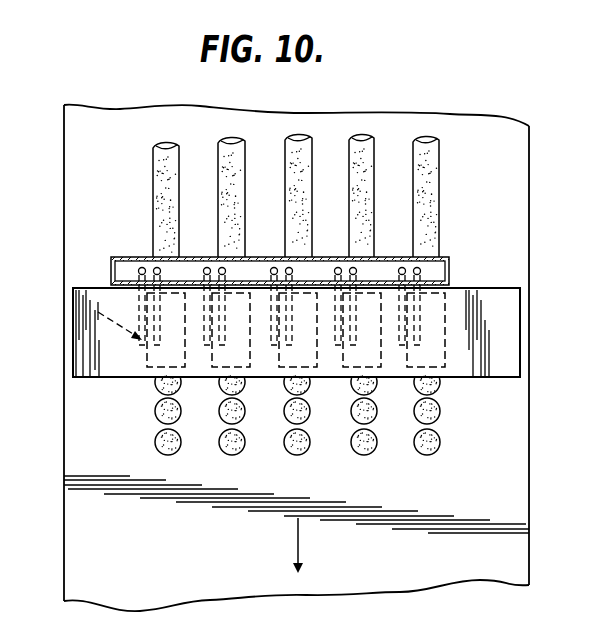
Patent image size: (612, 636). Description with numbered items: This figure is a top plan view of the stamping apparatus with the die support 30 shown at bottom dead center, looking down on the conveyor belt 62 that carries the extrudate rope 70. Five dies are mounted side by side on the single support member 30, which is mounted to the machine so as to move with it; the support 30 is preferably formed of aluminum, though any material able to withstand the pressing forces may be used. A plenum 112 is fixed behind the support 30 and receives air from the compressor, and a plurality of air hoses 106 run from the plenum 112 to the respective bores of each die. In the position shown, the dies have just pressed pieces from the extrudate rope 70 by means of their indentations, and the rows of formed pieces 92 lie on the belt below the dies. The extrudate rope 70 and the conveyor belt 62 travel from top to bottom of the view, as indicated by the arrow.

The support member 30 is at (505, 323).
The conveyor belt 62 is at (80, 197).
The extrudate rope 70 is at (285, 158).
The solder bumps 92 is at (155, 443).
The air hoses 106 is at (206, 344).
The plenum 112 is at (111, 267).